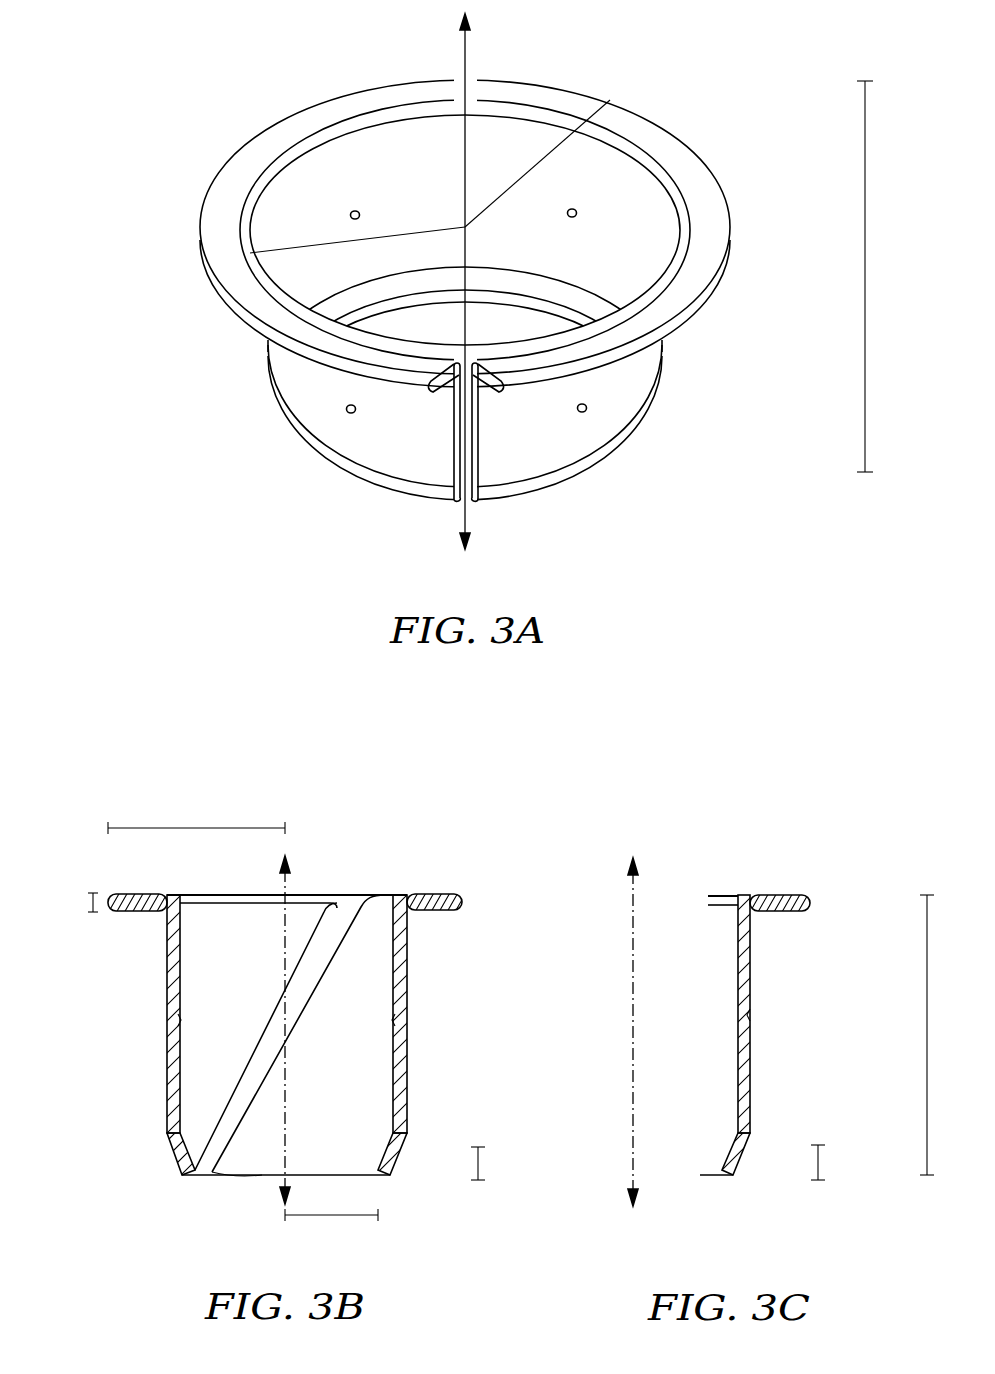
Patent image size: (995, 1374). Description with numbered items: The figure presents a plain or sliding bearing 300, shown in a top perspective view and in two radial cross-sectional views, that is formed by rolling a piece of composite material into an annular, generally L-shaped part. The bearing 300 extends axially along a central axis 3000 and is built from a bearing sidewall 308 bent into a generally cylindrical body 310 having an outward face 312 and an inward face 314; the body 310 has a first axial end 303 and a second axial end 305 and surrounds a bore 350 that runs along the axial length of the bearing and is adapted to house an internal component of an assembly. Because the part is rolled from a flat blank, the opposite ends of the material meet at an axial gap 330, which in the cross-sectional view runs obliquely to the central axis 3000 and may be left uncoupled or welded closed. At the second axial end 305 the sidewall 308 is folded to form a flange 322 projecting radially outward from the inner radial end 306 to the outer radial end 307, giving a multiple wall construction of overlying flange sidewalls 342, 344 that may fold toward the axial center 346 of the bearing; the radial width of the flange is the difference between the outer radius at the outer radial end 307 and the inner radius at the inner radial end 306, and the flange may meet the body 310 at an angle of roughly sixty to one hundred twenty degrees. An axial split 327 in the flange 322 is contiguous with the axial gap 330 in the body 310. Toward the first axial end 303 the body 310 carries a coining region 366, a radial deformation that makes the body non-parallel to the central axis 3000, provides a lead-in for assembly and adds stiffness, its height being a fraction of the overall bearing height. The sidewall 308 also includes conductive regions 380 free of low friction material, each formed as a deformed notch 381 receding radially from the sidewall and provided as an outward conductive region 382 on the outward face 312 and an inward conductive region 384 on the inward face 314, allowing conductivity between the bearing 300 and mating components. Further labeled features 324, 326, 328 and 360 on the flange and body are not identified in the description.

In FIG. 3A, the bearing 300 is at (748, 58).
In FIG. 3B, the bearing 300 is at (455, 878).
In FIG. 3C, the bearing 300 is at (808, 880).
In FIG. 3A, the first axial end 303 is at (628, 450).
In FIG. 3B, the first axial end 303 is at (391, 1178).
In FIG. 3C, the first axial end 303 is at (735, 1178).
In FIG. 3A, the second axial end 305 is at (494, 80).
In FIG. 3B, the second axial end 305 is at (422, 895).
In FIG. 3C, the second axial end 305 is at (736, 894).
In FIG. 3A, the inner radial end 306 is at (522, 303).
In FIG. 3B, the inner radial end 306 is at (393, 960).
In FIG. 3C, the inner radial end 306 is at (738, 940).
In FIG. 3A, the outer radial end 307 is at (734, 240).
In FIG. 3B, the outer radial end 307 is at (465, 903).
In FIG. 3C, the outer radial end 307 is at (812, 904).
In FIG. 3A, the bearing sidewall 308 is at (662, 350).
In FIG. 3B, the bearing sidewall 308 is at (408, 950).
In FIG. 3A, the generally cylindrical body 310 is at (662, 383).
In FIG. 3B, the generally cylindrical body 310 is at (403, 1078).
In FIG. 3A, the outward face 312 is at (278, 403).
In FIG. 3B, the outward face 312 is at (408, 1105).
In FIG. 3C, the outward face 312 is at (751, 975).
In FIG. 3A, the inward face 314 is at (465, 309).
In FIG. 3B, the inward face 314 is at (393, 1097).
In FIG. 3C, the inward face 314 is at (738, 1118).
In FIG. 3A, the flange 322 is at (227, 178).
In FIG. 3B, the flange 322 is at (138, 895).
In FIG. 3C, the flange 322 is at (792, 914).
In FIG. 3A, the inner edge of flange 324 is at (252, 279).
In FIG. 3A, the flange top surface 326 is at (705, 202).
In FIG. 3A, the axial split 327 is at (456, 360).
In FIG. 3A, the flange outer portion 328 is at (212, 223).
In FIG. 3A, the axial gap 330 is at (480, 505).
In FIG. 3B, the axial gap 330 is at (205, 1171).
In FIG. 3A, the flange sidewall 342 is at (412, 103).
In FIG. 3B, the flange sidewall 342 is at (130, 895).
In FIG. 3C, the flange sidewall 342 is at (772, 895).
In FIG. 3A, the flange sidewall 344 is at (706, 282).
In FIG. 3B, the flange sidewall 344 is at (130, 915).
In FIG. 3C, the flange sidewall 344 is at (762, 908).
In FIG. 3B, the axial center 346 is at (278, 1022).
In FIG. 3A, the bore 350 is at (448, 404).
In FIG. 3B, the bore 350 is at (290, 1035).
In FIG. 3C, the bore 350 is at (684, 1042).
In FIG. 3A, the wall-flange junction 360 is at (270, 352).
In FIG. 3A, the coining region 366 is at (298, 443).
In FIG. 3B, the coining region 366 is at (398, 1157).
In FIG. 3C, the coining region 366 is at (745, 1155).
In FIG. 3A, the conductive region 380 is at (686, 158).
In FIG. 3B, the conductive region 380 is at (162, 904).
In FIG. 3C, the conductive region 380 is at (756, 896).
In FIG. 3B, the deformed notch 381 is at (164, 904).
In FIG. 3C, the deformed notch 381 is at (758, 895).
In FIG. 3C, the outward conductive region 382 is at (751, 1017).
In FIG. 3A, the inward conductive region 384 is at (350, 214).
In FIG. 3A, the central axis 3000 is at (468, 48).
In FIG. 3B, the central axis 3000 is at (290, 868).
In FIG. 3C, the central axis 3000 is at (636, 866).